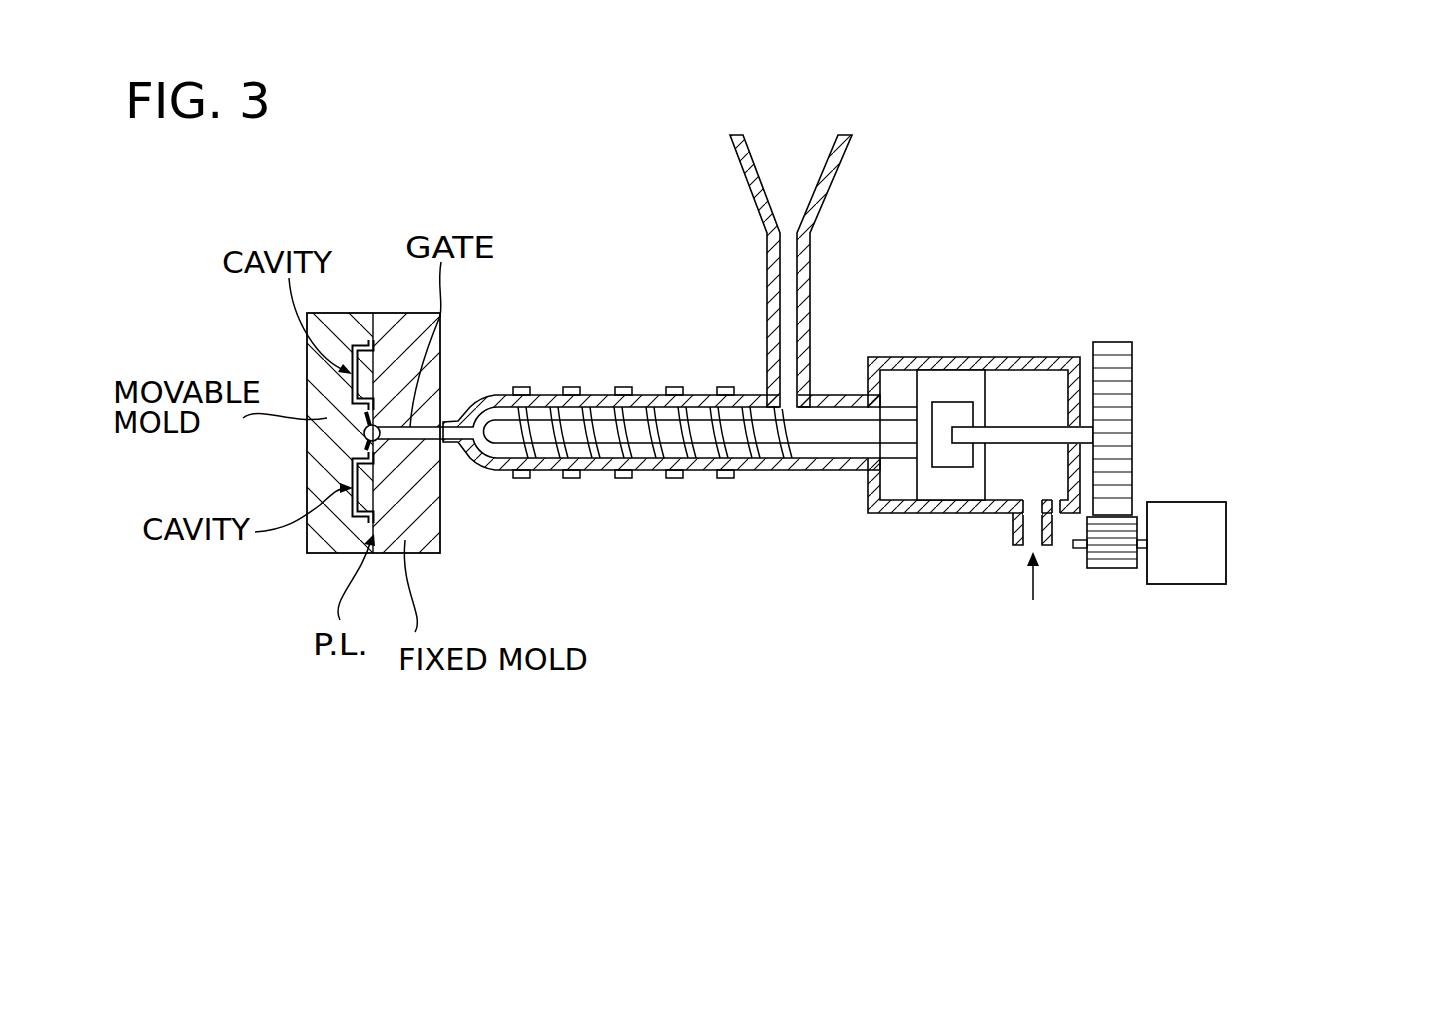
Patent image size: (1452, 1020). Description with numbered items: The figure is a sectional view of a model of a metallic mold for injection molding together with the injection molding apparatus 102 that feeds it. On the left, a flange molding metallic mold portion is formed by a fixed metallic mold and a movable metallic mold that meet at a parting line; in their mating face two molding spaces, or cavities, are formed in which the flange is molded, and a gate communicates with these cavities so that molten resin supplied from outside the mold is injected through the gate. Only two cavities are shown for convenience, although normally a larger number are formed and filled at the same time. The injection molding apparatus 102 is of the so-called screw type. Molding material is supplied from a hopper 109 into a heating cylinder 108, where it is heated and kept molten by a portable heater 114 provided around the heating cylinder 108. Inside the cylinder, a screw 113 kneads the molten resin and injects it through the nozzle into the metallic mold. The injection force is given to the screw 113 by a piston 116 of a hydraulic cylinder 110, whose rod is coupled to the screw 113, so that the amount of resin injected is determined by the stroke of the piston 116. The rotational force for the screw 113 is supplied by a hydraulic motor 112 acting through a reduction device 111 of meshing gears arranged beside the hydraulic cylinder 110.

The injection molding apparatus 102 is at (746, 570).
The heating cylinder 108 is at (705, 472).
The hopper 109 is at (828, 185).
The hydraulic cylinder 110 is at (952, 357).
The reduction device 111 is at (1133, 415).
The hydraulic motor 112 is at (1200, 585).
The screw 113 is at (637, 462).
The portable heater 114 is at (622, 387).
The piston 116 is at (992, 482).